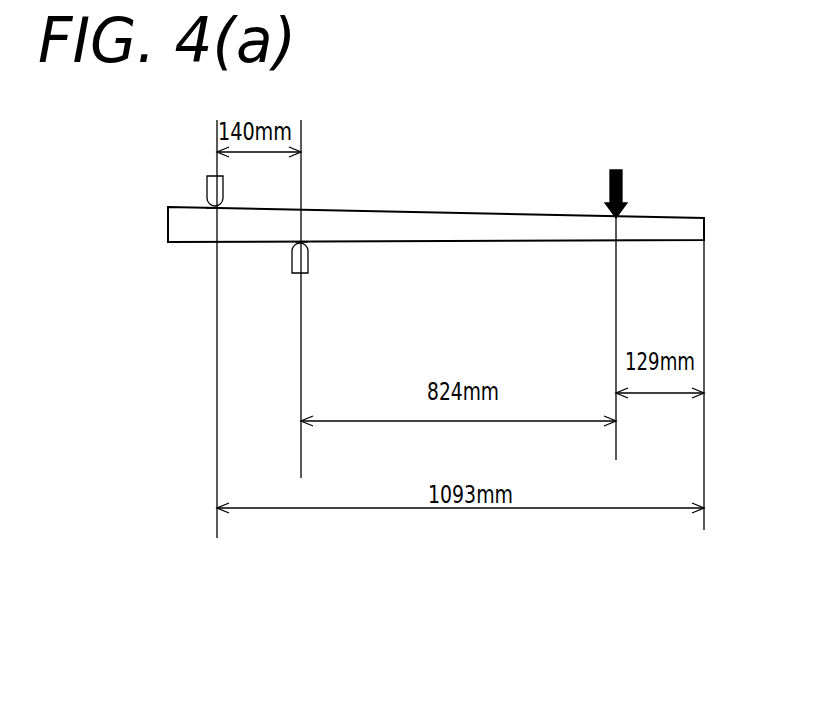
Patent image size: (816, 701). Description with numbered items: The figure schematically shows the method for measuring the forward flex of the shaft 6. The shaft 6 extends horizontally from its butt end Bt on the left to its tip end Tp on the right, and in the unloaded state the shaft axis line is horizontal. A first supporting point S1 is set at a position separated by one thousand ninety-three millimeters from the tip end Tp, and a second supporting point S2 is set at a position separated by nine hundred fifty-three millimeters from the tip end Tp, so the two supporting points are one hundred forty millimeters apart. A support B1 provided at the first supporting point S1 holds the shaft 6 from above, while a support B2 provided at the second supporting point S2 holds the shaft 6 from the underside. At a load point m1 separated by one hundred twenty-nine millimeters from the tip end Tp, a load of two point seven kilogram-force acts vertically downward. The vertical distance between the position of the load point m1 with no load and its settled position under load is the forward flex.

The shaft 6 is at (405, 212).
The butt end Bt is at (168, 223).
The tip end Tp is at (704, 232).
The first supporting point S1 is at (206, 209).
The second supporting point S2 is at (295, 241).
The support B1 is at (224, 195).
The support B2 is at (310, 256).
The load point m1 is at (618, 216).